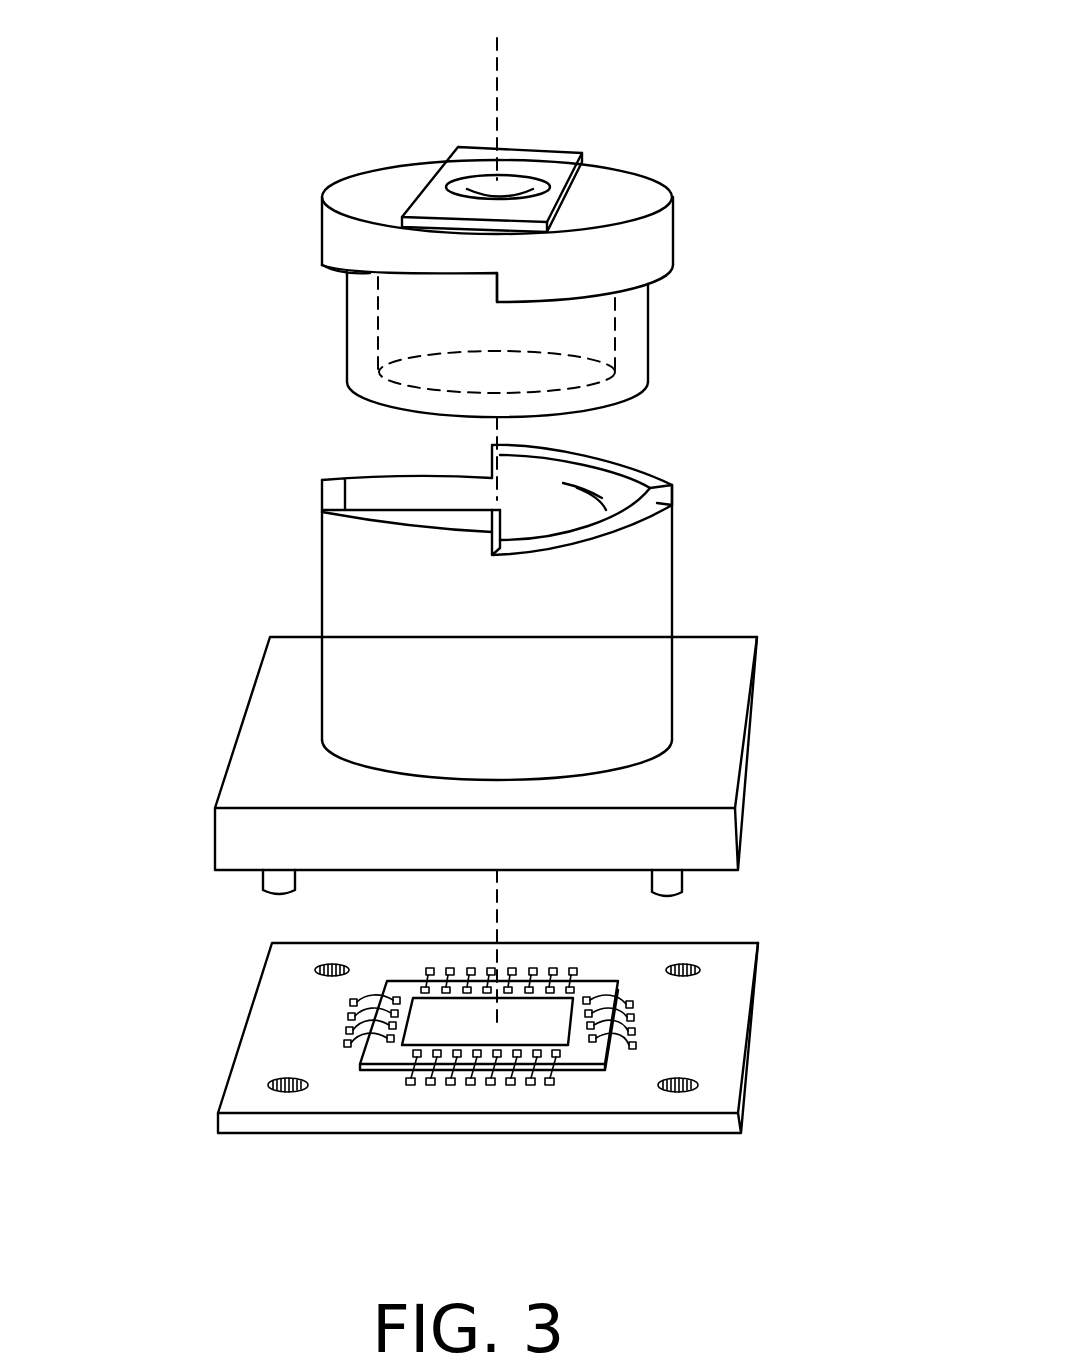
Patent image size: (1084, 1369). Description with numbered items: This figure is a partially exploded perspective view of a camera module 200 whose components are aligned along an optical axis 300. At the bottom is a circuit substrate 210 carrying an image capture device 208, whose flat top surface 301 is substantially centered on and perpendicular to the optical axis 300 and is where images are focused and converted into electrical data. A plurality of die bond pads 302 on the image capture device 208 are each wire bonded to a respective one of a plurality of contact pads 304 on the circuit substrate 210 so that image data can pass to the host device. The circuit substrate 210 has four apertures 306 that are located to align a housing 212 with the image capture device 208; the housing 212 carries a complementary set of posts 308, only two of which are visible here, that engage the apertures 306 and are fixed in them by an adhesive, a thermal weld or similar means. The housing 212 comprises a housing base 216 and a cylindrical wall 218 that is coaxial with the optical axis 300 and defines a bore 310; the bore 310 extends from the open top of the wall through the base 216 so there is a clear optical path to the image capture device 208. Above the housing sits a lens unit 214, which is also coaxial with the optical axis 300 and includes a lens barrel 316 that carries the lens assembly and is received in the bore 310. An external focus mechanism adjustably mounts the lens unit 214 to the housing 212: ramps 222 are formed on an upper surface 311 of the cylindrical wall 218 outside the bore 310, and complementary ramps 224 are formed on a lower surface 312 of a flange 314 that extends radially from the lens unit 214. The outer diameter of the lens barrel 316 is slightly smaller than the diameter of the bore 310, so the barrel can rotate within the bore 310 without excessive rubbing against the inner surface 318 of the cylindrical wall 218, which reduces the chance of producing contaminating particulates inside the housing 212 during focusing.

The camera module 200 is at (782, 45).
The image capture device 208 is at (519, 1066).
The circuit substrate 210 is at (577, 1097).
The housing 212 is at (783, 592).
The lens unit 214 is at (705, 278).
The housing base 216 is at (705, 777).
The cylindrical wall 218 is at (340, 617).
The ramps 222 is at (628, 530).
The complementary ramps 224 is at (502, 290).
The optical axis 300 is at (500, 515).
The flat top surface 301 is at (556, 1035).
The die bond pads 302 is at (570, 992).
The contact pads 304 is at (628, 1035).
The apertures 306 is at (315, 970).
The posts 308 is at (273, 885).
The bore 310 is at (523, 495).
The upper surface 311 is at (650, 500).
The lower surface 312 is at (367, 272).
The flange 314 is at (435, 248).
The lens barrel 316 is at (640, 351).
The inner surface 318 is at (577, 488).